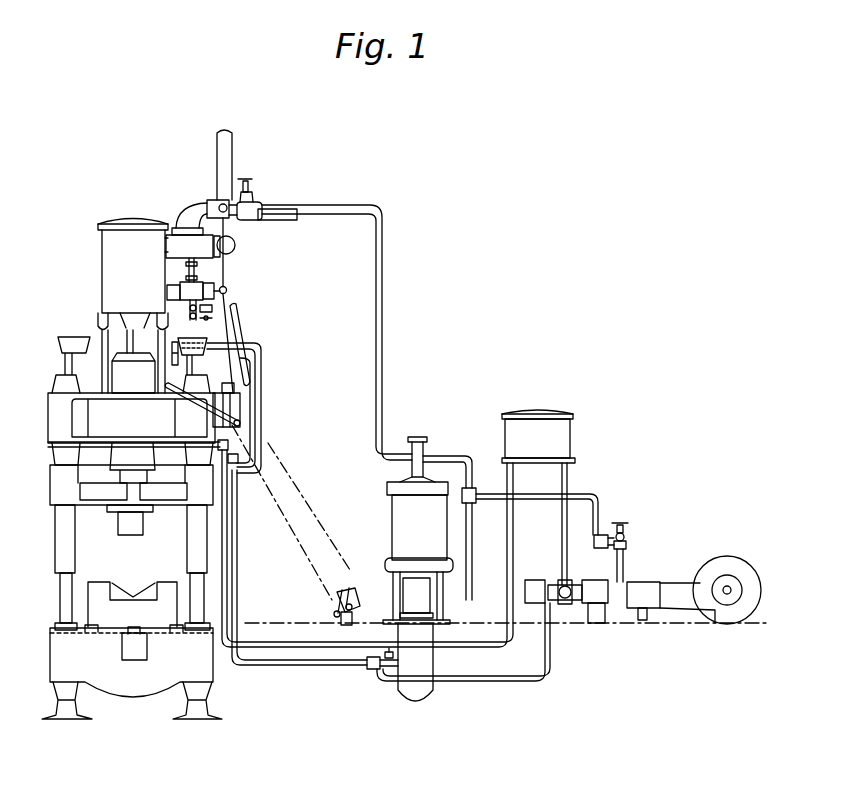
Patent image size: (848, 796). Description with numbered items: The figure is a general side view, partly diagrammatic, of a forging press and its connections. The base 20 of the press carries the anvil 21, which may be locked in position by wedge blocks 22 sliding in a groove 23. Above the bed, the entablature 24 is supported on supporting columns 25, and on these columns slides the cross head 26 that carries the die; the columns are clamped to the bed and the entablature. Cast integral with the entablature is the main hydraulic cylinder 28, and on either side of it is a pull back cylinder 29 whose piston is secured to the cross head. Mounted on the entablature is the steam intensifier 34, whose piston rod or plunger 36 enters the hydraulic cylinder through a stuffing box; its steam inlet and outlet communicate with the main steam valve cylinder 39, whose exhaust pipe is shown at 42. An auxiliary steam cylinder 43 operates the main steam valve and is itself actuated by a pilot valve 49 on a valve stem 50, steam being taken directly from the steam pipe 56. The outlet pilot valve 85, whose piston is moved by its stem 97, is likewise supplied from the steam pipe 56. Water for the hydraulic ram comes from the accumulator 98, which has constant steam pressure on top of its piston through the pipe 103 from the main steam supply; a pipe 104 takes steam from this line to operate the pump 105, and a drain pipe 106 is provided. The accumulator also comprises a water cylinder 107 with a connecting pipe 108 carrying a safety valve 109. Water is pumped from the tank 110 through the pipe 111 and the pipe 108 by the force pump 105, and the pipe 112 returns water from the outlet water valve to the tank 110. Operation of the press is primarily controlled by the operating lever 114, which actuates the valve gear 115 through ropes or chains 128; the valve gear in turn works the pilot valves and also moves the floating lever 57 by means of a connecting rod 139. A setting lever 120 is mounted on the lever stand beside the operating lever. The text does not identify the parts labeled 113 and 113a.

The base 20 is at (132, 673).
The anvil 21 is at (134, 608).
The wedge blocks 22 is at (78, 625).
The groove 23 is at (67, 634).
The entablature 24 is at (138, 421).
The supporting columns 25 is at (131, 564).
The cross head 26 is at (131, 489).
The main hydraulic cylinder 28 is at (133, 373).
The pull back cylinder 29 is at (131, 365).
The steam intensifier 34 is at (133, 306).
The piston rod or plunger 36 is at (128, 344).
The main steam valve cylinder 39 is at (189, 246).
The exhaust pipe 42 is at (236, 247).
The steam cylinder 43 is at (193, 291).
The pilot valve 49 is at (228, 291).
The valve stem 50 is at (196, 276).
The steam pipe 56 is at (228, 272).
The floating lever 57 is at (203, 318).
The outlet pilot valve 85 is at (240, 425).
The stem 97 is at (240, 417).
The accumulator 98 is at (418, 530).
The pipe 103 is at (384, 312).
The pipe 104 is at (451, 456).
The pump 105 is at (694, 590).
The drain pipe 106 is at (471, 572).
The water cylinder 107 is at (415, 662).
The connecting pipe 108 is at (315, 569).
The safety valve 109 is at (390, 652).
The tank 110 is at (538, 436).
The pipe 111 is at (561, 534).
The pipe 112 is at (520, 478).
The valve 113 is at (254, 198).
The elbow pipe 113a is at (192, 208).
The operating lever 114 is at (352, 592).
The valve gear 115 is at (236, 397).
The setting lever 120 is at (348, 588).
The ropes or chains 128 is at (283, 479).
The connecting rod 139 is at (246, 339).